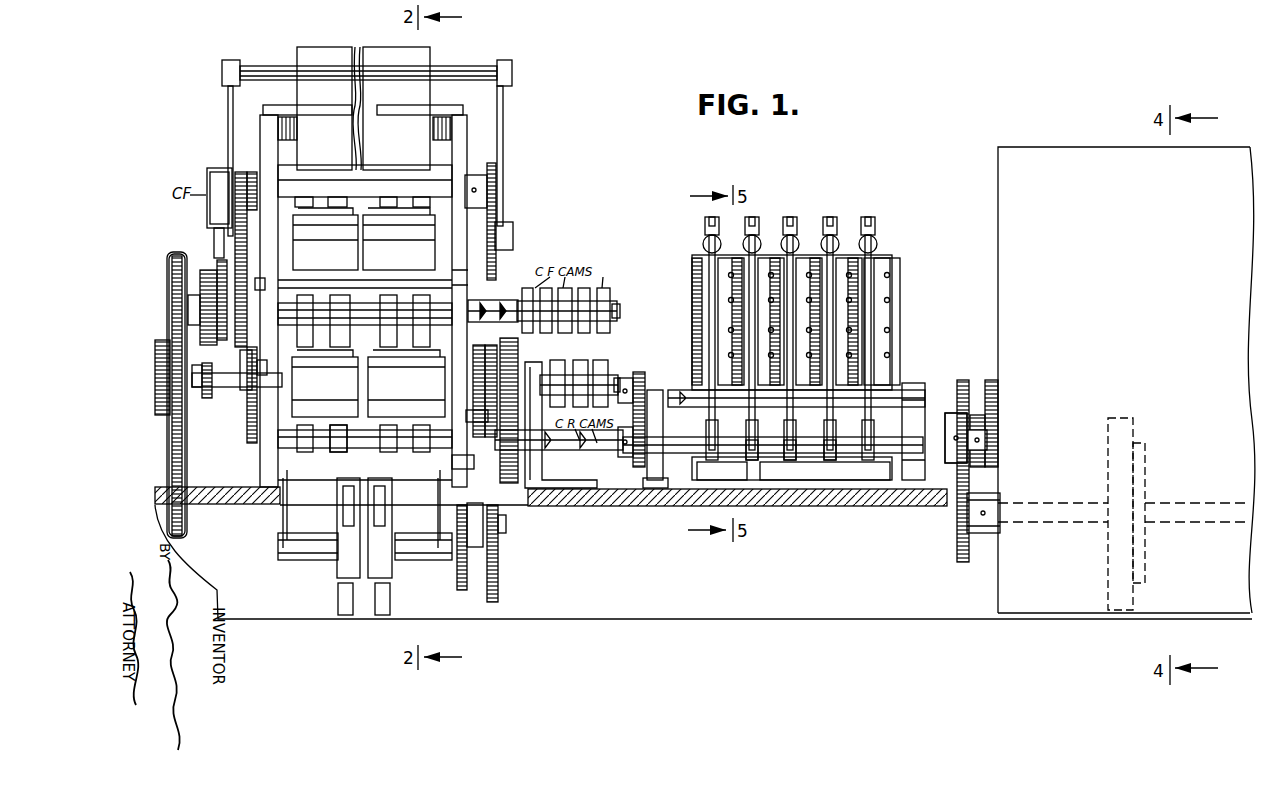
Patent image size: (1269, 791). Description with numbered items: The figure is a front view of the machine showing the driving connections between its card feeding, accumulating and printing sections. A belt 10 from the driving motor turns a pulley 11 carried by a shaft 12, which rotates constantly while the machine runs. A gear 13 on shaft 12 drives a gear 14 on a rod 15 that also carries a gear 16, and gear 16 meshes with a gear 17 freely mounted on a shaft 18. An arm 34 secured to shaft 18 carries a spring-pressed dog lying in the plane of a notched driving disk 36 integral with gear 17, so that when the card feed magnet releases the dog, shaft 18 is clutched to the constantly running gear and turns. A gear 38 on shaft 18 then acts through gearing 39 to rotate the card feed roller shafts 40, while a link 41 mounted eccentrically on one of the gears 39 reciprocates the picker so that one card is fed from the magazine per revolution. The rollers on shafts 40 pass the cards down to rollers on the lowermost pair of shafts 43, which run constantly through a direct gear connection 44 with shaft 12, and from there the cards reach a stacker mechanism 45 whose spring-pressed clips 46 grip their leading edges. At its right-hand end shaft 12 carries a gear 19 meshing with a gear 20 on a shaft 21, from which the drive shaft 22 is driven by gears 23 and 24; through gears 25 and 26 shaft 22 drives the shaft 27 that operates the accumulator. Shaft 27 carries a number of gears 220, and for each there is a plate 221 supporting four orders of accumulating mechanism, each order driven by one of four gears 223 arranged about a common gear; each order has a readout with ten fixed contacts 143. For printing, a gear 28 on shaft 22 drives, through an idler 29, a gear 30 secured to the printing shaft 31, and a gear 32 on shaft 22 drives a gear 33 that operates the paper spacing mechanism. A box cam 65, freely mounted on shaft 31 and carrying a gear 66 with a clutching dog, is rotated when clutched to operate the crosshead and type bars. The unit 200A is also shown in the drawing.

The belt 10 is at (177, 461).
The pulley 11 is at (168, 328).
The shaft 12 is at (218, 398).
The gear 13 is at (243, 393).
The gear 14 is at (247, 355).
The rod 15 is at (210, 403).
The gear 16 is at (205, 357).
The gear 17 is at (202, 282).
The shaft 18 is at (508, 310).
The gear 19 is at (512, 368).
The gear 20 is at (483, 352).
The shaft 21 is at (550, 378).
The drive shaft 22 is at (598, 447).
The gear 23 is at (517, 340).
The gear 24 is at (510, 480).
The gear 25 is at (638, 470).
The gear 26 is at (638, 375).
The shaft 27 is at (673, 393).
The gear 28 is at (962, 457).
The idler 29 is at (962, 383).
The gear 30 is at (962, 552).
The printing shaft 31 is at (957, 515).
The gear 32 is at (993, 442).
The gear 33 is at (993, 363).
The arm 34 is at (225, 288).
The notched driving disk 36 is at (198, 310).
The gear 38 is at (262, 284).
The gearing 39 is at (247, 172).
The card feed roller shafts 40 is at (388, 197).
The link 41 is at (228, 118).
The lowermost pair of shafts 43 is at (340, 437).
The gear connection 44 is at (487, 415).
The stacker mechanism 45 is at (343, 567).
The spring-pressed clips 46 is at (380, 603).
The box cam 65 is at (1130, 598).
The gear 66 is at (1143, 553).
The fixed contacts 143 is at (880, 298).
The counter unit 200A is at (830, 265).
The gears 220 is at (823, 432).
The plate 221 is at (853, 247).
The gears 223 is at (698, 340).